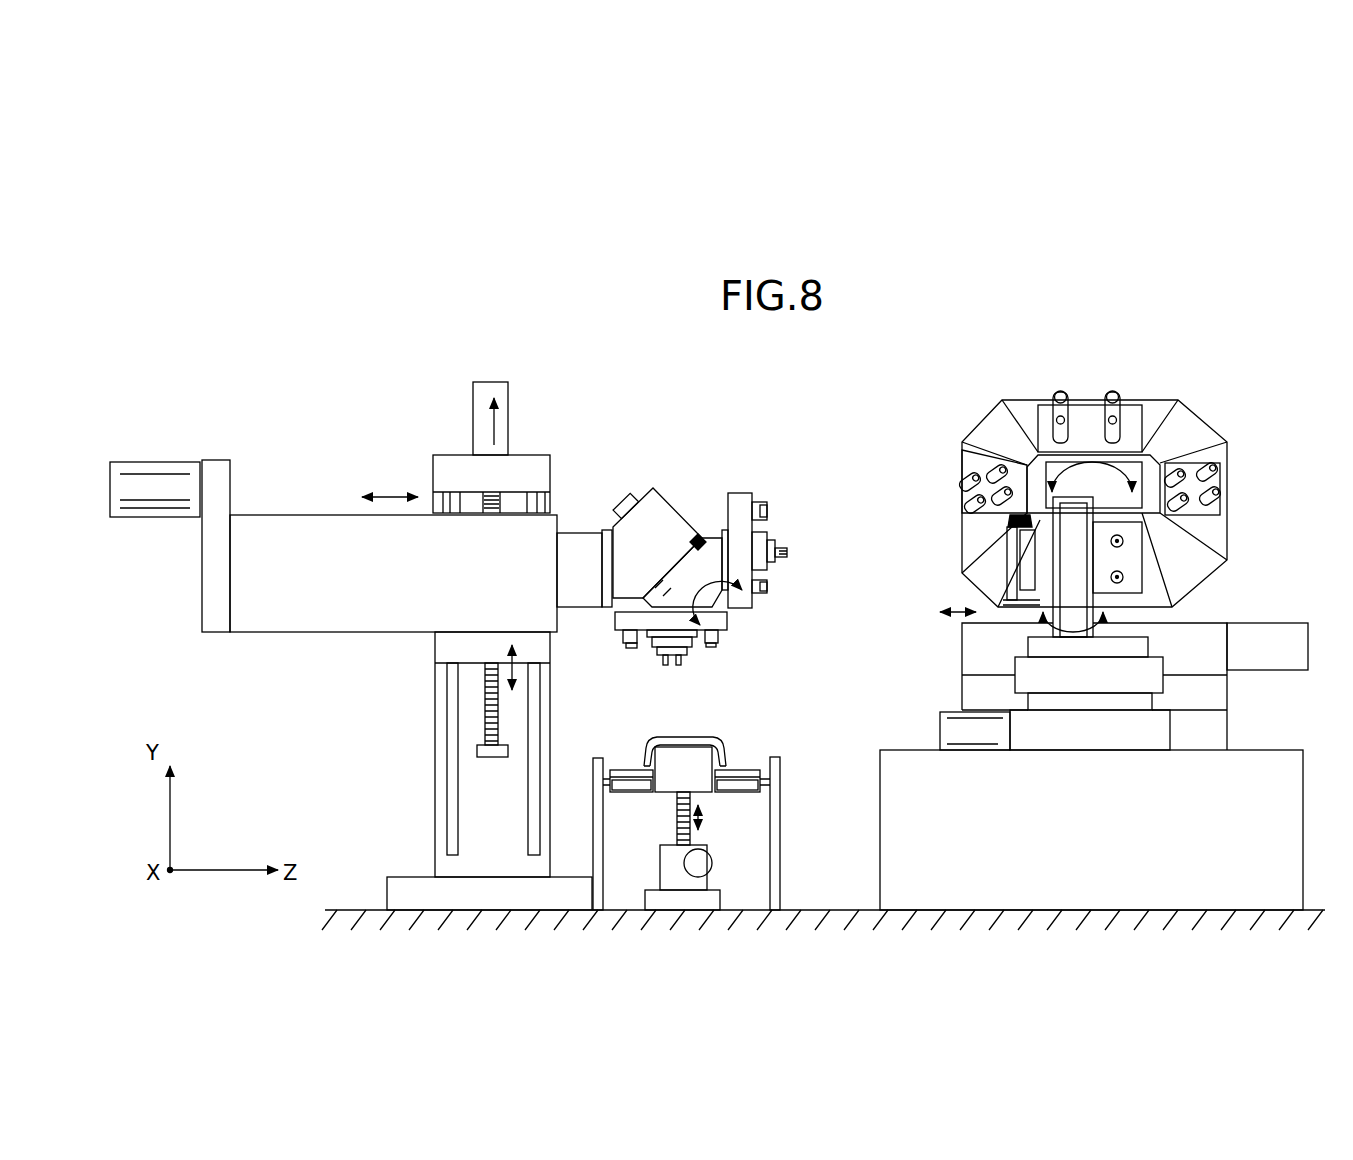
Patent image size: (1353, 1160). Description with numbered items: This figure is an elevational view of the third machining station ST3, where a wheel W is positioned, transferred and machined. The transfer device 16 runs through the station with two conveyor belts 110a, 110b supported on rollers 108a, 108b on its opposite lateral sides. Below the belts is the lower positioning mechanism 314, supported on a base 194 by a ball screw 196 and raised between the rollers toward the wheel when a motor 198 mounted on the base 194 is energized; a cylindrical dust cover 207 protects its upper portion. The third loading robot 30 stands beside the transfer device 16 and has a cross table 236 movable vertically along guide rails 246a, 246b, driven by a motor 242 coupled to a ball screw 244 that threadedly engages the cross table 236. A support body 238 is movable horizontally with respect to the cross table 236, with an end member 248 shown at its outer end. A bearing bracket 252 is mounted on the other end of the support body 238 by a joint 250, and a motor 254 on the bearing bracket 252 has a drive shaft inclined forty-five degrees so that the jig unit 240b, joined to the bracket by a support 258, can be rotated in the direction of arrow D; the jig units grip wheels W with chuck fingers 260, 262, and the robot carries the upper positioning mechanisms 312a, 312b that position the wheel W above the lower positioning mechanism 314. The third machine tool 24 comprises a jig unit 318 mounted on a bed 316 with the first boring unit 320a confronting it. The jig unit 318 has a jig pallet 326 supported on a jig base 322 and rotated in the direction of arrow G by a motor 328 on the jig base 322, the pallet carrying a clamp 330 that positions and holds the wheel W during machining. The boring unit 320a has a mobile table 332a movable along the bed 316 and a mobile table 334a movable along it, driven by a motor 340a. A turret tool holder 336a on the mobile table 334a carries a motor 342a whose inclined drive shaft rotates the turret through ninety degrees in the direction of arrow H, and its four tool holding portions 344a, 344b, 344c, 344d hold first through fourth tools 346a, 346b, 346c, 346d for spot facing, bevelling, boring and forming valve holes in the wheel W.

The transfer device 16 is at (577, 887).
The third machine tool 24 is at (1175, 345).
The third loading robot 30 is at (622, 410).
The roller 108a is at (631, 790).
The roller 108b is at (745, 792).
The conveyor belt 110a is at (622, 770).
The conveyor belt 110b is at (745, 770).
The base 194 is at (673, 877).
The ball screw 196 is at (690, 832).
The motor 198 is at (704, 863).
The cylindrical dust cover 207 is at (698, 788).
The cross table 236 is at (448, 650).
The support body 238 is at (287, 527).
The jig unit 240b is at (737, 490).
The motor 242 is at (488, 398).
The ball screw 244 is at (492, 760).
The guide rail 246a is at (450, 803).
The guide rail 246b is at (533, 812).
The counterweight 248 is at (172, 478).
The joint 250 is at (583, 560).
The bearing bracket 252 is at (668, 515).
The motor 254 is at (628, 502).
The support 258 is at (680, 590).
The chuck fingers 260 is at (727, 636).
The chuck fingers 262 is at (760, 503).
The upper positioning mechanism 312a is at (645, 658).
The upper positioning mechanism 312b is at (775, 518).
The lower positioning mechanism 314 is at (666, 826).
The bed 316 is at (1033, 882).
The jig unit 318 is at (1012, 648).
The first boring unit 320a is at (1226, 407).
The jig base 322 is at (1108, 735).
The jig pallet 326 is at (1065, 650).
The motor 328 is at (982, 733).
The clamp 330 is at (1020, 560).
The mobile table 332a is at (1222, 728).
The mobile table 334a is at (1190, 632).
The turret tool holder 336a is at (990, 430).
The motor 340a is at (1262, 662).
The motor 342a is at (1098, 458).
The tool holding portion 344a is at (1153, 412).
The tool holding portion 344b is at (965, 452).
The tool holding portion 344c is at (1130, 563).
The tool holding portion 344d is at (1220, 483).
The first tool 346a is at (1067, 393).
The second tool 346b is at (966, 488).
The third tool 346c is at (1125, 541).
The fourth tool 346d is at (1215, 470).
The wheel W is at (726, 742).
The third machining station ST3 is at (516, 930).